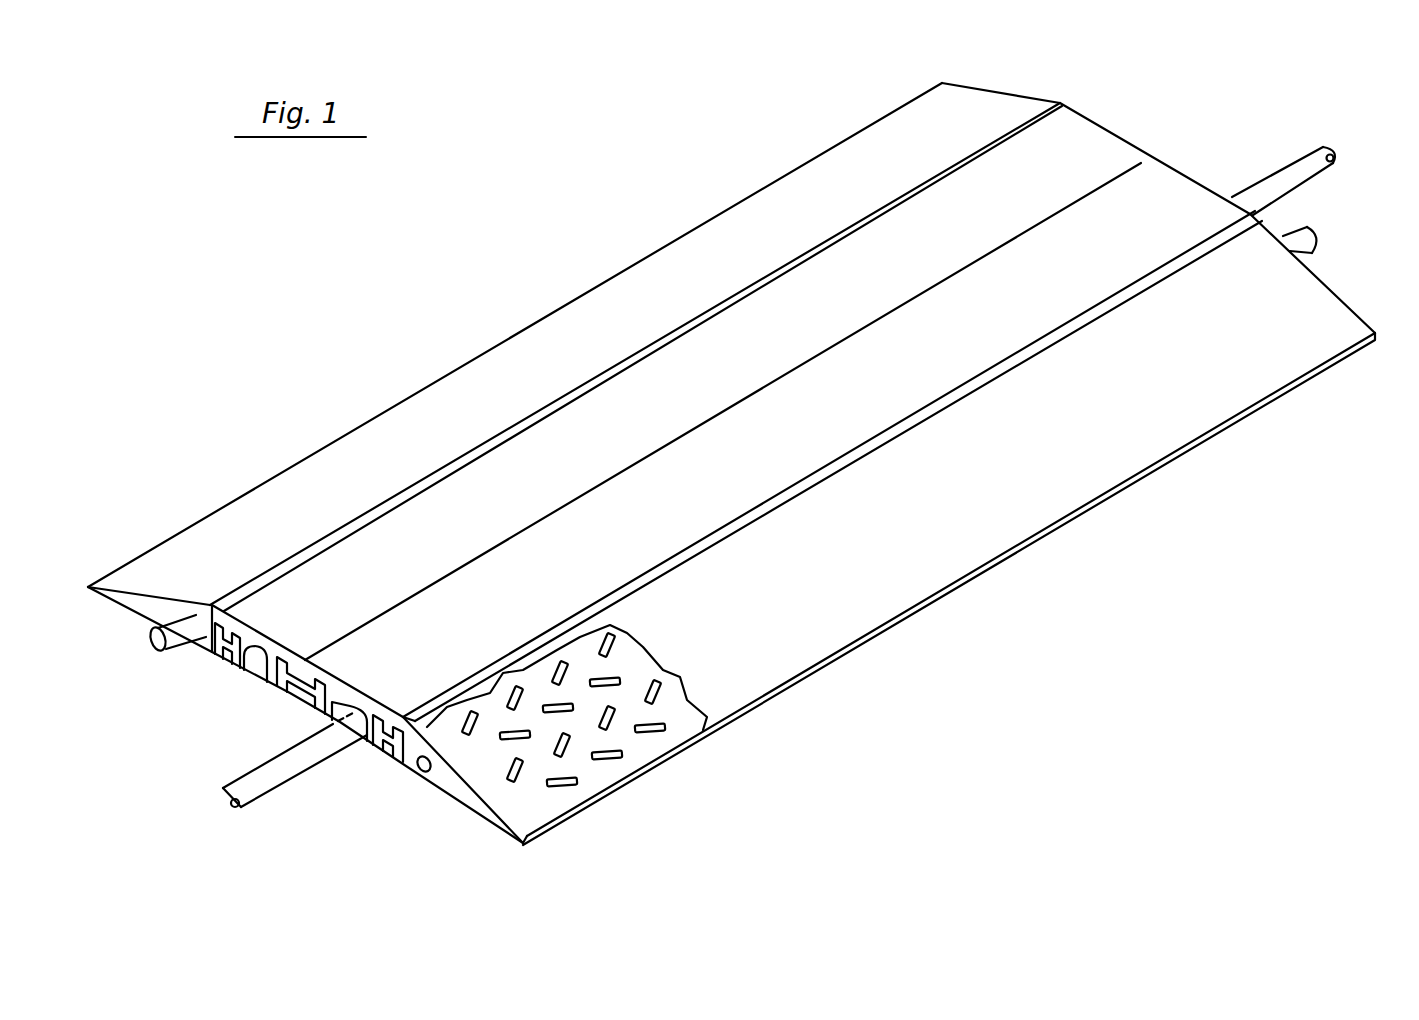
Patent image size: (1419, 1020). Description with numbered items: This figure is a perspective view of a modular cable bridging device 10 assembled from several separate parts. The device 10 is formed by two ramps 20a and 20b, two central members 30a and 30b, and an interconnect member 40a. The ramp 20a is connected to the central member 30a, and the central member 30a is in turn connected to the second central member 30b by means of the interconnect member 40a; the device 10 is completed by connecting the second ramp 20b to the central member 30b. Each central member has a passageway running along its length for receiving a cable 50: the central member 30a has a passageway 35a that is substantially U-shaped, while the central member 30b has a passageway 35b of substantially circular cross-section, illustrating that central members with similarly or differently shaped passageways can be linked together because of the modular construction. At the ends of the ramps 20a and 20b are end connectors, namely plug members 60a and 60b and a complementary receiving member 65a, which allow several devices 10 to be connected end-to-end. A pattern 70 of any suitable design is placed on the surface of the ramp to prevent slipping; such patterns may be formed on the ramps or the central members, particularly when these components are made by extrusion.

The modular cable bridging device 10 is at (575, 228).
The ramp 20a is at (795, 613).
The ramp 20b is at (338, 465).
The central member 30a is at (1167, 190).
The central member 30b is at (1085, 135).
The passageway 35a is at (350, 760).
The passageway 35b is at (222, 676).
The interconnect member 40a is at (270, 690).
The cable 50 is at (233, 798).
The plug member 60a is at (1316, 242).
The plug member 60b is at (151, 648).
The receiving member 65a is at (422, 772).
The pattern 70 is at (634, 748).